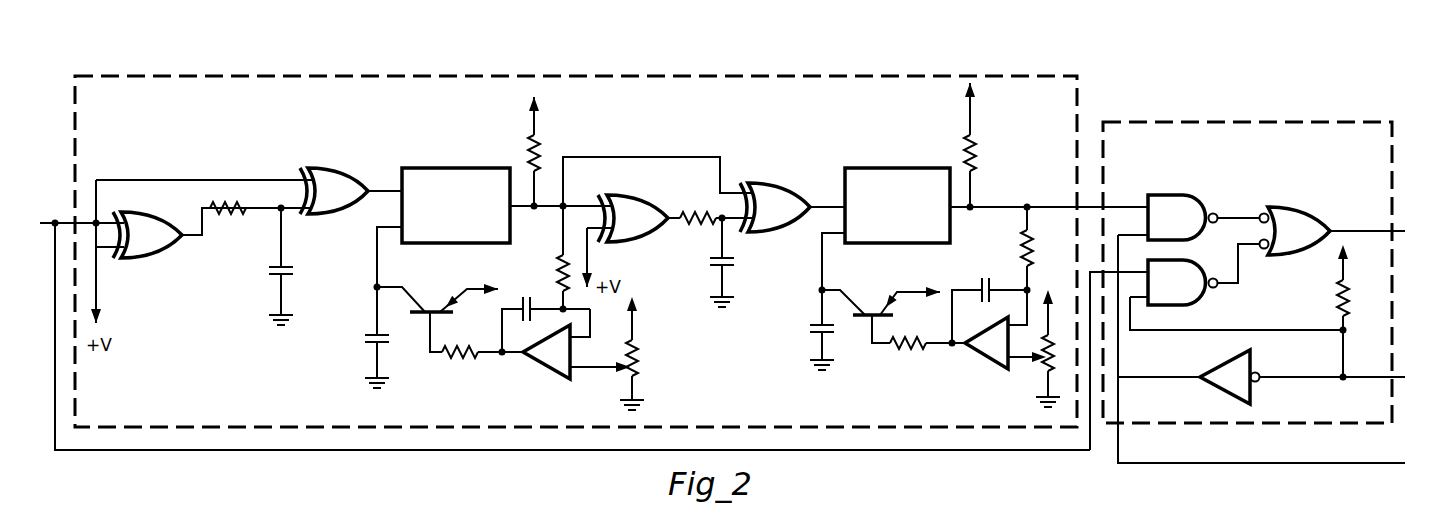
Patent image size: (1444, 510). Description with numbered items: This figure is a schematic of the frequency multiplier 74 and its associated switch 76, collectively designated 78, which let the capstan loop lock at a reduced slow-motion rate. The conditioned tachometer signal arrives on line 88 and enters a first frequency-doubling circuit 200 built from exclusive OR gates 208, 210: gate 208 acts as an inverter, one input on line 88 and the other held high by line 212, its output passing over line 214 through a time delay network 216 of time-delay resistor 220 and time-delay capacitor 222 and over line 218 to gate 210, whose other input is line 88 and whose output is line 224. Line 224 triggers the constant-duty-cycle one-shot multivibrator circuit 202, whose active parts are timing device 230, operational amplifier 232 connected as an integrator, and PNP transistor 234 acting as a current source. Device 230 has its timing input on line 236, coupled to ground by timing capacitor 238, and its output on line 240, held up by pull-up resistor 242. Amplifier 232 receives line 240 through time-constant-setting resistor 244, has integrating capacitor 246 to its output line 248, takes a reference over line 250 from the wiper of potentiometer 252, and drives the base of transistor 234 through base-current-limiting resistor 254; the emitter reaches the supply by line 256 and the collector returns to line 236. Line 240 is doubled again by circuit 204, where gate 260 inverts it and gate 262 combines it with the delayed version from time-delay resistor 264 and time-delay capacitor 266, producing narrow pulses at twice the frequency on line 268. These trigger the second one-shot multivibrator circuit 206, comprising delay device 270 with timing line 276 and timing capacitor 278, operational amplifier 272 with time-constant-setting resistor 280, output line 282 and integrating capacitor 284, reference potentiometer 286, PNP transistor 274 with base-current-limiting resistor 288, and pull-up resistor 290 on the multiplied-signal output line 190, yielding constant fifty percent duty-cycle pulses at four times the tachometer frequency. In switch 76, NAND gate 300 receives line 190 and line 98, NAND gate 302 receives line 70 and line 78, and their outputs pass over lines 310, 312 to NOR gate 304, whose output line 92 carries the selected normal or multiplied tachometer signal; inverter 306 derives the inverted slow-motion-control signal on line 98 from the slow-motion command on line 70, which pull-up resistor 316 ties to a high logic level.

The line 70 is at (1386, 377).
The frequency multiplier 74 is at (300, 427).
The switch 76 is at (1188, 425).
The multiplier and switch combination 78 is at (1087, 456).
The line 88 is at (205, 450).
The line 92 is at (1385, 231).
The line 98 is at (1335, 463).
The line 190 is at (1072, 207).
The frequency-doubling circuit 200 is at (249, 248).
The constant-duty-cycle one-shot multivibrator circuit 202 is at (504, 320).
The frequency-doubling circuit 204 is at (721, 259).
The one-shot multivibrator circuit 206 is at (914, 320).
The exclusive OR gate 208 is at (160, 247).
The exclusive OR gate 210 is at (348, 203).
The line 212 is at (100, 289).
The line 214 is at (188, 225).
The time delay network 216 is at (252, 249).
The line 218 is at (286, 214).
The time-delay resistor 220 is at (228, 217).
The time-delay capacitor 222 is at (294, 271).
The line 224 is at (376, 191).
The timing device 230 is at (478, 160).
The operational amplifier 232 is at (550, 378).
The PNP transistor 234 is at (436, 300).
The line 236 is at (377, 310).
The capacitor 238 is at (370, 341).
The line 240 is at (641, 157).
The resistor 242 is at (538, 153).
The time-constant-setting resistor 244 is at (559, 261).
The integrating capacitor 246 is at (527, 303).
The line 248 is at (502, 358).
The line 250 is at (600, 370).
The reference-potential-setting potentiometer 252 is at (640, 360).
The base current limiting resistor 254 is at (462, 348).
The line 256 is at (470, 289).
The exclusive-OR gate 260 is at (646, 231).
The exclusive-OR gate 262 is at (789, 220).
The time-delay resistor 264 is at (698, 214).
The time-delay capacitor 266 is at (720, 265).
The line 268 is at (828, 205).
The delay device 270 is at (919, 168).
The operational amplifier 272 is at (985, 365).
The PNP transistor 274 is at (868, 301).
The line 276 is at (820, 272).
The timing capacitor 278 is at (820, 325).
The time-constant-setting resistor 280 is at (1022, 250).
The line 282 is at (938, 348).
The integrating capacitor 284 is at (982, 282).
The reference-potential-setting potentiometer 286 is at (1052, 380).
The base-current-limiting resistor 288 is at (910, 338).
The pull-up resistor 290 is at (976, 154).
The two-input NAND gate 300 is at (1188, 231).
The two-input NAND gate 302 is at (1188, 296).
The two-input NOR gate 304 is at (1308, 244).
The inverter 306 is at (1210, 365).
The line 310 is at (1235, 218).
The line 312 is at (1242, 264).
The pull-up resistor 316 is at (1337, 297).